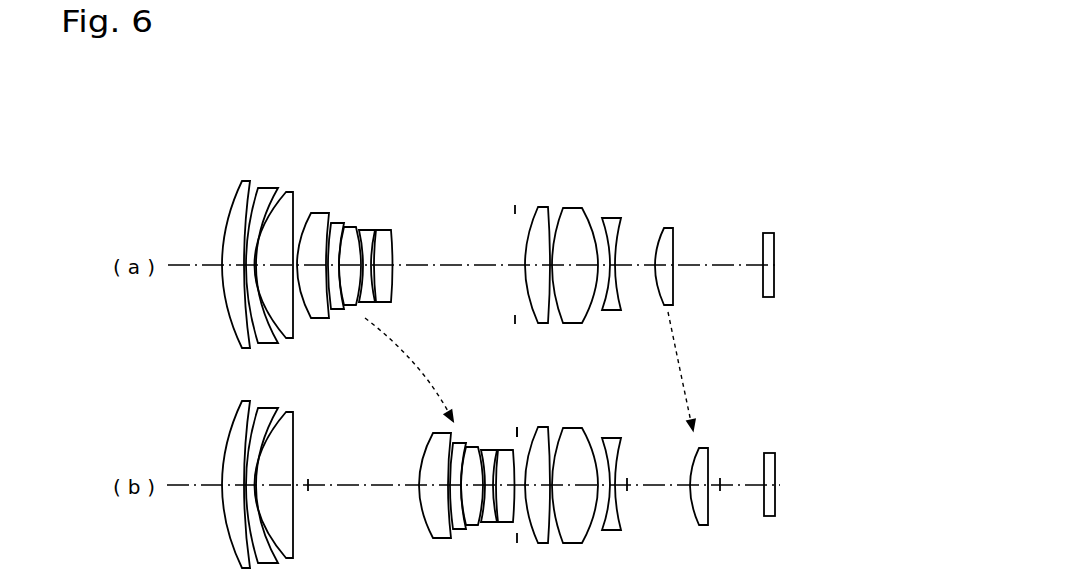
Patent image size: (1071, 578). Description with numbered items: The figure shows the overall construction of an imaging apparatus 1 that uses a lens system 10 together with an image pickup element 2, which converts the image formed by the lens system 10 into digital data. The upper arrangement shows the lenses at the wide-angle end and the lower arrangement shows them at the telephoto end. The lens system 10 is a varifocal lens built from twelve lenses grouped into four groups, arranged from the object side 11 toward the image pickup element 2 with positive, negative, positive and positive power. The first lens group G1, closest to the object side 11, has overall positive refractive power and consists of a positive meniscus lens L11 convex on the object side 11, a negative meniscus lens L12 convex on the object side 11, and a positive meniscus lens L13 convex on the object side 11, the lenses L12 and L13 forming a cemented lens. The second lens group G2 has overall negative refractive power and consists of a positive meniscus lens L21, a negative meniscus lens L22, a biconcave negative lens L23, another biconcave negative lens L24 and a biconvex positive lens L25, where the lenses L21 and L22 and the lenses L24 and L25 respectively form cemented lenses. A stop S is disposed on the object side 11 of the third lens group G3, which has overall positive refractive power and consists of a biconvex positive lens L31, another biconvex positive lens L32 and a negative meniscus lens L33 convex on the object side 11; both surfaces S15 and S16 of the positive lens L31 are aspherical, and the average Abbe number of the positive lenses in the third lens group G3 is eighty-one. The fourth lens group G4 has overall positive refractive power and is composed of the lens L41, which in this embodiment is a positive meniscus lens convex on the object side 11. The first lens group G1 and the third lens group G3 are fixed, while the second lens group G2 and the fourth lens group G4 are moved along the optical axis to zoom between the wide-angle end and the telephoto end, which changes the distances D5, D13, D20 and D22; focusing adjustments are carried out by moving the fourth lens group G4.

The imaging apparatus 1 is at (779, 123).
The image pickup element 2 is at (769, 236).
The lens system 10 is at (211, 139).
The object side 11 is at (177, 222).
The first lens group G1 is at (333, 99).
The second lens group G2 is at (547, 99).
The third lens group G3 is at (678, 99).
The fourth lens group G4 is at (748, 99).
The positive meniscus lens L11 is at (247, 185).
The negative meniscus lens L12 is at (268, 190).
The positive meniscus lens L13 is at (284, 195).
The positive meniscus lens L21 is at (327, 212).
The negative meniscus lens L22 is at (334, 222).
The negative lens L23 is at (351, 226).
The negative lens L24 is at (368, 228).
The positive lens L25 is at (386, 228).
The positive lens L31 is at (545, 206).
The positive lens L32 is at (580, 207).
The negative meniscus lens L33 is at (612, 217).
The positive meniscus lens L41 is at (668, 232).
The stop S is at (513, 210).
The aspherical surface S15 is at (526, 277).
The aspherical surface S16 is at (547, 312).
The distance D5 is at (308, 482).
The distance D13 is at (517, 455).
The distance D20 is at (627, 482).
The distance D22 is at (720, 482).